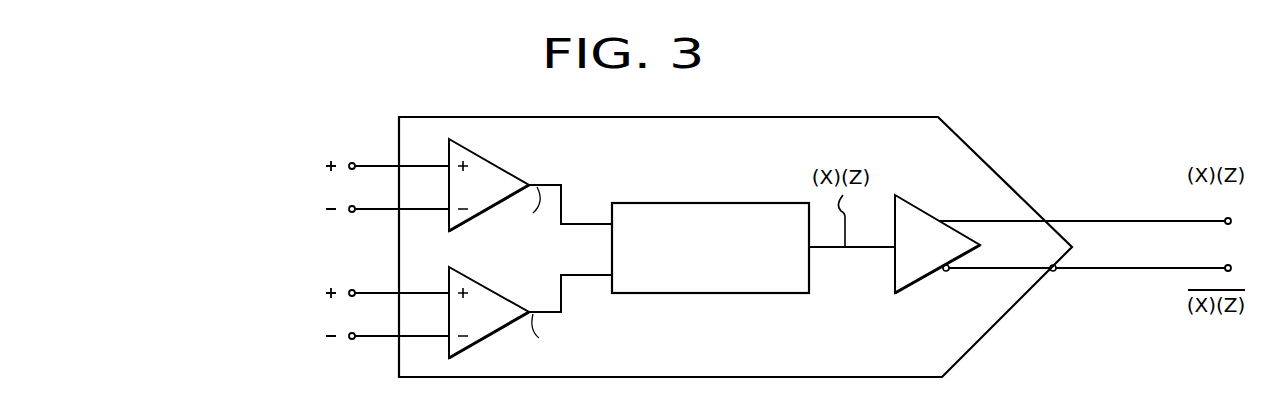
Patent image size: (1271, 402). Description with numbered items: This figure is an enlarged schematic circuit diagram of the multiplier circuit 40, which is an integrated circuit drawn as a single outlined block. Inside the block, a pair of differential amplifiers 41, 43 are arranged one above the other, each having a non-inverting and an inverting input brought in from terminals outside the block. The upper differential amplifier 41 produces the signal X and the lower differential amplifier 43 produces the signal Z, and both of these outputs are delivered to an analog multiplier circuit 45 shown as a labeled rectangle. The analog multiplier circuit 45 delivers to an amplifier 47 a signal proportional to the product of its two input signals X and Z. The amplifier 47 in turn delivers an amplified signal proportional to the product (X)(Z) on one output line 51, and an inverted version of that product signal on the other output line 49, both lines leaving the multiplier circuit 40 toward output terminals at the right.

The multiplier circuit 40 is at (1015, 300).
The differential amplifier 41 is at (488, 158).
The differential amplifier 43 is at (518, 305).
The analog multiplier circuit 45 is at (690, 203).
The amplifier 47 is at (922, 280).
The output line 49 is at (1007, 272).
The output line 51 is at (1003, 218).